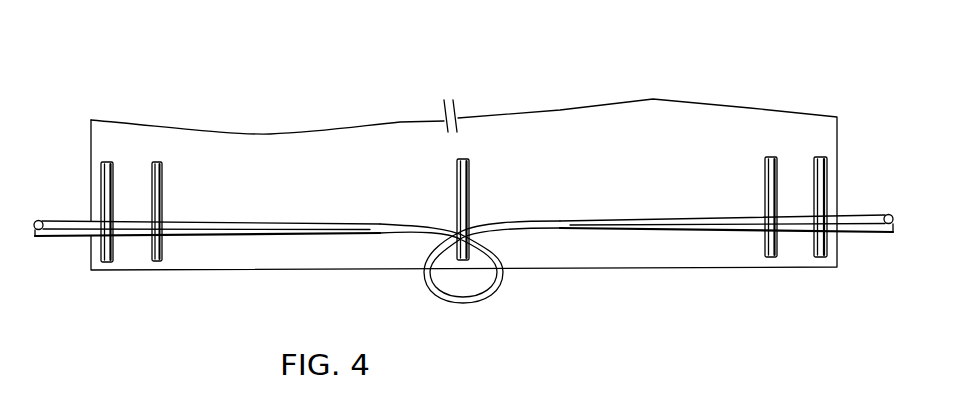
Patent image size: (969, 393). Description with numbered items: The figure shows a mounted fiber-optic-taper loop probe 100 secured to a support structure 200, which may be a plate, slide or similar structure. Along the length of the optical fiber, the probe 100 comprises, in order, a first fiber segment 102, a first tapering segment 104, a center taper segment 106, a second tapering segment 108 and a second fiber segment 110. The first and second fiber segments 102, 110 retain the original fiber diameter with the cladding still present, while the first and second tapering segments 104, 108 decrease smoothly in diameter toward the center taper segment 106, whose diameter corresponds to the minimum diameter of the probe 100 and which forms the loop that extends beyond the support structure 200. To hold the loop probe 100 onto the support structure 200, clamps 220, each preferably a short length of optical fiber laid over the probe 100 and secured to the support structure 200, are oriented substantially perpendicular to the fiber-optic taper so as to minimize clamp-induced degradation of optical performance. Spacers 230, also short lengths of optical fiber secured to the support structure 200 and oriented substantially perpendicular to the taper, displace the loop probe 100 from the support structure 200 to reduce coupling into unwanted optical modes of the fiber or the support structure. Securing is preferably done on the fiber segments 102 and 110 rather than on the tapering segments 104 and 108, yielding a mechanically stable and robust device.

The fiber-optic-taper probe 100 is at (580, 77).
The support structure 200 is at (673, 170).
The clamp 220 is at (108, 162).
The spacer 230 is at (463, 193).
The first fiber segment 102 is at (66, 234).
The first tapering segment 104 is at (305, 233).
The center taper segment 106 is at (468, 303).
The second tapering segment 108 is at (607, 230).
The second fiber segment 110 is at (863, 230).